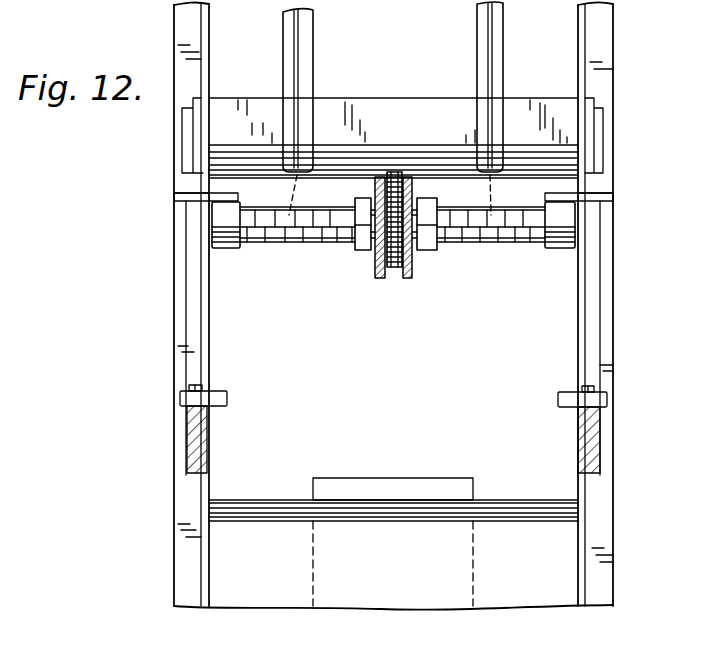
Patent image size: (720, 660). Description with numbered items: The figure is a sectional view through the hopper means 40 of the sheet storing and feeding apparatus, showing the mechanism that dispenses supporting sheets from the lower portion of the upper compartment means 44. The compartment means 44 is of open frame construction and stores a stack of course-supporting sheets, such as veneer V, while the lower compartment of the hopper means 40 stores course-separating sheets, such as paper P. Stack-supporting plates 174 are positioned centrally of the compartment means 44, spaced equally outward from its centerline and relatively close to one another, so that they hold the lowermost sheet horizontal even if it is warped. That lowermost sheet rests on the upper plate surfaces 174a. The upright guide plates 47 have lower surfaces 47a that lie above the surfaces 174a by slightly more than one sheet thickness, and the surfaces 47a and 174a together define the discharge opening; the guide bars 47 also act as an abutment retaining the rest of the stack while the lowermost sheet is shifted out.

The hopper means 40 is at (154, 350).
The second compartment means 44 is at (572, 72).
The upright guide members 47 is at (478, 23).
The lower surfaces of the guide plates 47a is at (393, 235).
The stack-supporting plates 174 is at (385, 278).
The upper plate surfaces 174a is at (408, 175).
The veneer V is at (252, 150).
The paper P is at (266, 512).